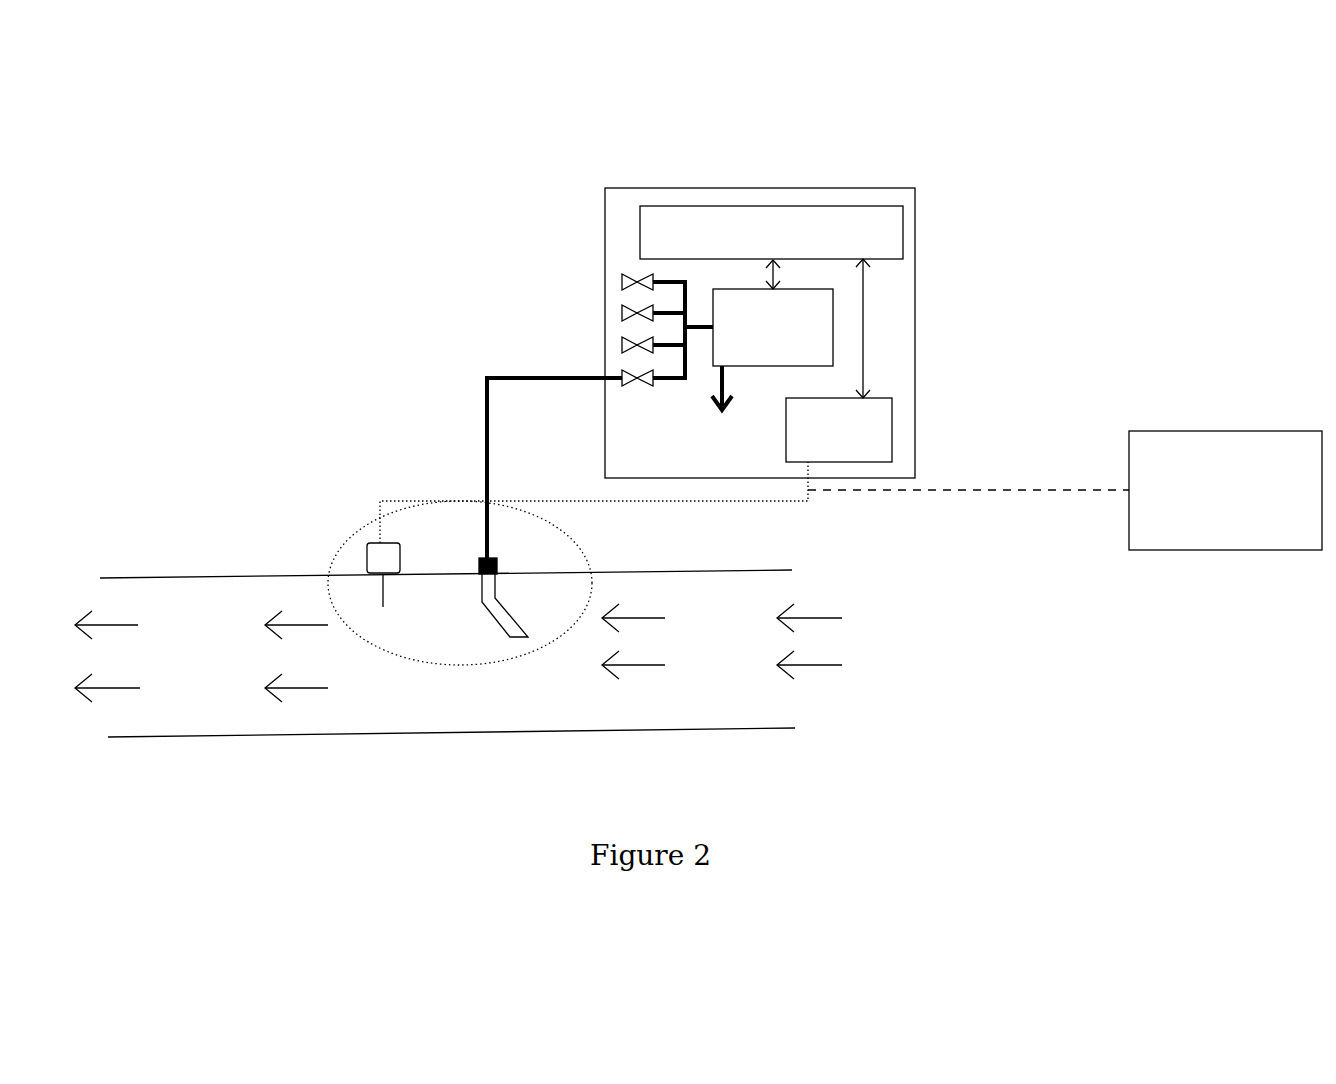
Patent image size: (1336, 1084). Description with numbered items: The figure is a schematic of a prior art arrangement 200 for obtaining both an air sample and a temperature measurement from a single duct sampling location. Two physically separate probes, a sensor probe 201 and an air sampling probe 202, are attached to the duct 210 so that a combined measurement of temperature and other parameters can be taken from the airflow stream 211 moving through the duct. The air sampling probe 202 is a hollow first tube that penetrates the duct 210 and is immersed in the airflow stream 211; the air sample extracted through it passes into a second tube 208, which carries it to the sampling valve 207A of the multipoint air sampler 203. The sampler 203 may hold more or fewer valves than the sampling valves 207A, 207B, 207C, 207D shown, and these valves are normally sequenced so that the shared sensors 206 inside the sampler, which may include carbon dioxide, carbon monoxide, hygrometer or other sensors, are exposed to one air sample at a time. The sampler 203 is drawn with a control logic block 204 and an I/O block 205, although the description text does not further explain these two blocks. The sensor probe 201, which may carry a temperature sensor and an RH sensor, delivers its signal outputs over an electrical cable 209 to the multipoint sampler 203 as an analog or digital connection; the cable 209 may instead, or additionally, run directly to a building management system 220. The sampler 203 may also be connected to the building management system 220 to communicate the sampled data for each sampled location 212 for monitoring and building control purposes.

The prior art duct sampling arrangement 200 is at (316, 149).
The sensor probe 201 is at (360, 562).
The air sampling probe 202 is at (553, 556).
The multipoint air sampler 203 is at (832, 183).
The control logic 204 is at (890, 244).
The I/O module 205 is at (882, 438).
The shared sensors 206 is at (820, 355).
The sampling valve 207A is at (622, 378).
The sampling valve 207B is at (622, 346).
The sampling valve 207C is at (622, 314).
The sampling valve 207D is at (622, 284).
The second tube 208 is at (487, 440).
The electrical cable 209 is at (388, 500).
The duct 210 is at (590, 733).
The airflow stream 211 is at (835, 642).
The sampled location 212 is at (455, 665).
The building management system 220 is at (1065, 490).